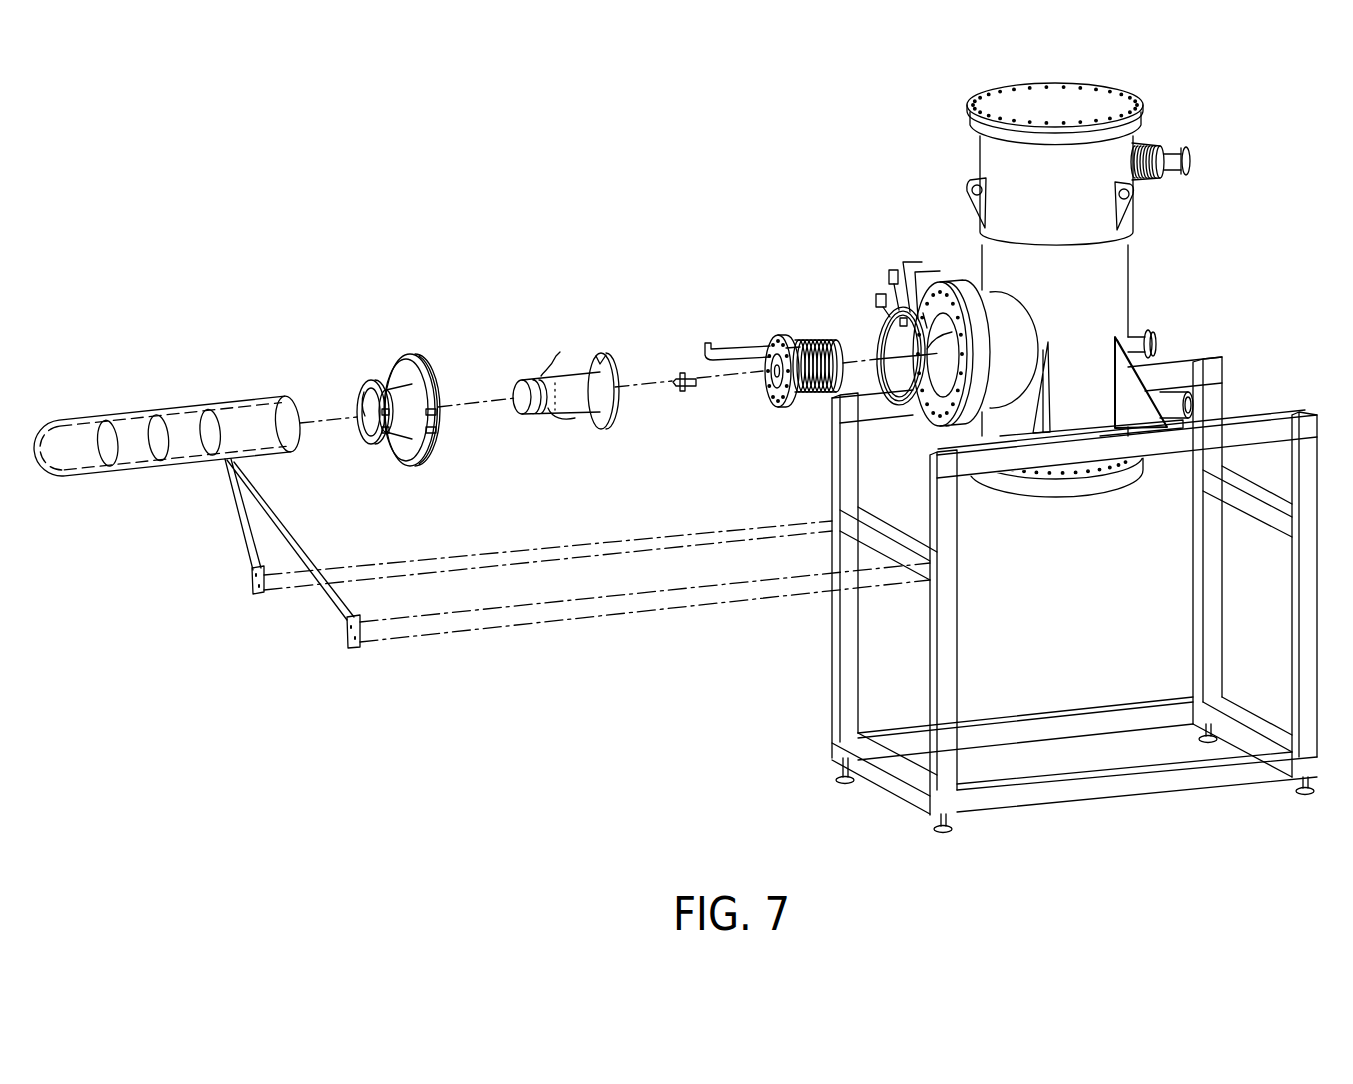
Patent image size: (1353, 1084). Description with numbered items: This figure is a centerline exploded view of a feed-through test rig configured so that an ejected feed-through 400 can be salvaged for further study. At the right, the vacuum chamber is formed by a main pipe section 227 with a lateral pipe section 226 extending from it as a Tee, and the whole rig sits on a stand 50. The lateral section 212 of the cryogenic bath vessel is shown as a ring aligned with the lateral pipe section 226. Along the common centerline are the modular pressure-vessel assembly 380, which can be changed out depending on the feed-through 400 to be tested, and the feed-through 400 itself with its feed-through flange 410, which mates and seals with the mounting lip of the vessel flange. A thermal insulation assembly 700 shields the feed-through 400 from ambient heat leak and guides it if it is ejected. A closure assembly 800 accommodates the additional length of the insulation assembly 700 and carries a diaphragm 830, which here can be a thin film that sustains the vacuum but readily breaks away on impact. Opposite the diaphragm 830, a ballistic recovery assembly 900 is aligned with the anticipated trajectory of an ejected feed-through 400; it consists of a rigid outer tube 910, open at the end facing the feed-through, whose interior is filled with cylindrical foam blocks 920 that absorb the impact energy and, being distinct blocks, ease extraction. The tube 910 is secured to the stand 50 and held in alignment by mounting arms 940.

The stand 50 is at (803, 618).
The lateral section 212 is at (930, 395).
The lateral pipe section 226 is at (987, 301).
The main pipe section 227 is at (1128, 291).
The modular pressure-vessel assembly 380 is at (771, 322).
The feed-through 400 is at (674, 369).
The feed-through flange 410 is at (672, 327).
The thermal insulation assembly 700 is at (553, 350).
The closure assembly 800 is at (384, 352).
The diaphragm 830 is at (366, 397).
The ballistic recovery assembly 900 is at (238, 397).
The tube 910 is at (117, 410).
The cylindrical foam blocks 920 is at (192, 449).
The mounting arms 940 is at (287, 533).